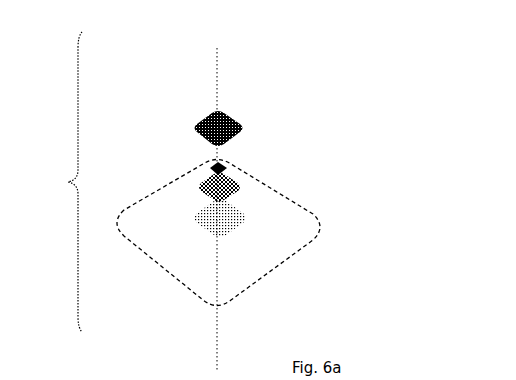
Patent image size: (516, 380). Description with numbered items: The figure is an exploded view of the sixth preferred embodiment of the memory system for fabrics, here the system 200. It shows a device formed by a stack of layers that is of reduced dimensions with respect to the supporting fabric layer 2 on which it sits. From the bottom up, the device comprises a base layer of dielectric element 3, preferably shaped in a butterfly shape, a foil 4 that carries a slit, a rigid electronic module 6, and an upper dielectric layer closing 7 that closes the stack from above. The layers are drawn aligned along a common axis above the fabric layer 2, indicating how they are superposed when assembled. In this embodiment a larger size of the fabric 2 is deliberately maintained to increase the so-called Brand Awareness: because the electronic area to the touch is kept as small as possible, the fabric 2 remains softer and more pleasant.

The system 200 is at (53, 182).
The fabric layer 2 is at (273, 243).
The layer of dielectric element 3 is at (229, 205).
The foil 4 is at (228, 177).
The rigid electronic module 6 is at (224, 155).
The upper dielectric layer closing 7 is at (228, 110).